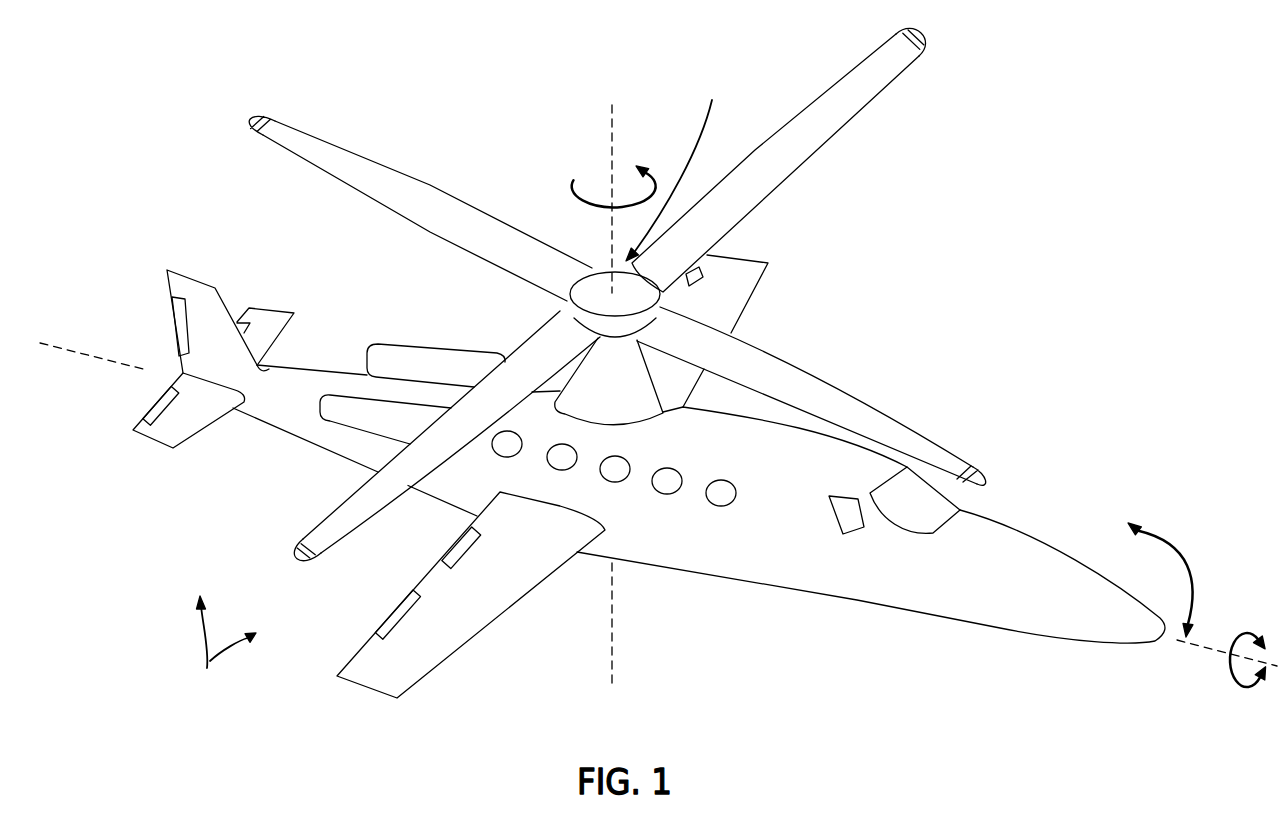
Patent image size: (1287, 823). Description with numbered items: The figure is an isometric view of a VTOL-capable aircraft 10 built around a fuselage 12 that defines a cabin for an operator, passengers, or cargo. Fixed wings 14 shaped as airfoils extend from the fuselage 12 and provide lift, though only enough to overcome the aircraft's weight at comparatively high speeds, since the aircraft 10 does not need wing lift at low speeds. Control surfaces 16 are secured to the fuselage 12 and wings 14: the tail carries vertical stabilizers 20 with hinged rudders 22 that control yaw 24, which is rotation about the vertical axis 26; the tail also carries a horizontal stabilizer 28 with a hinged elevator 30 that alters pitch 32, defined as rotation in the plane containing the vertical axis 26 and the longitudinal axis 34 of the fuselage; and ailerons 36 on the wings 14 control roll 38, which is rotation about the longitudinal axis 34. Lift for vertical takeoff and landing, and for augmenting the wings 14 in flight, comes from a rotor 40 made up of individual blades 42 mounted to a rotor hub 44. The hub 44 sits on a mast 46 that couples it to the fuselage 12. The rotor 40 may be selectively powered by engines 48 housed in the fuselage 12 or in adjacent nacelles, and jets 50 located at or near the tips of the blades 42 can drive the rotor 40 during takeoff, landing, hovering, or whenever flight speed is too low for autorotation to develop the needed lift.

The aircraft 10 is at (995, 264).
The fuselage 12 is at (770, 571).
The fixed wings 14 is at (463, 631).
The control surfaces 16 is at (221, 649).
The vertical stabilizer 20 is at (195, 293).
The rudder 22 is at (178, 328).
The yaw 24 is at (577, 187).
The vertical axis 26 is at (612, 127).
The horizontal stabilizer 28 is at (187, 420).
The elevator 30 is at (157, 407).
The pitch 32 is at (1191, 552).
The longitudinal axis 34 is at (1212, 648).
The ailerons 36 is at (462, 543).
The roll 38 is at (1243, 689).
The rotor 40 is at (675, 166).
The blades 42 is at (390, 173).
The rotor hub 44 is at (617, 325).
The mast 46 is at (606, 387).
The engines 48 is at (418, 355).
The jets 50 is at (270, 117).